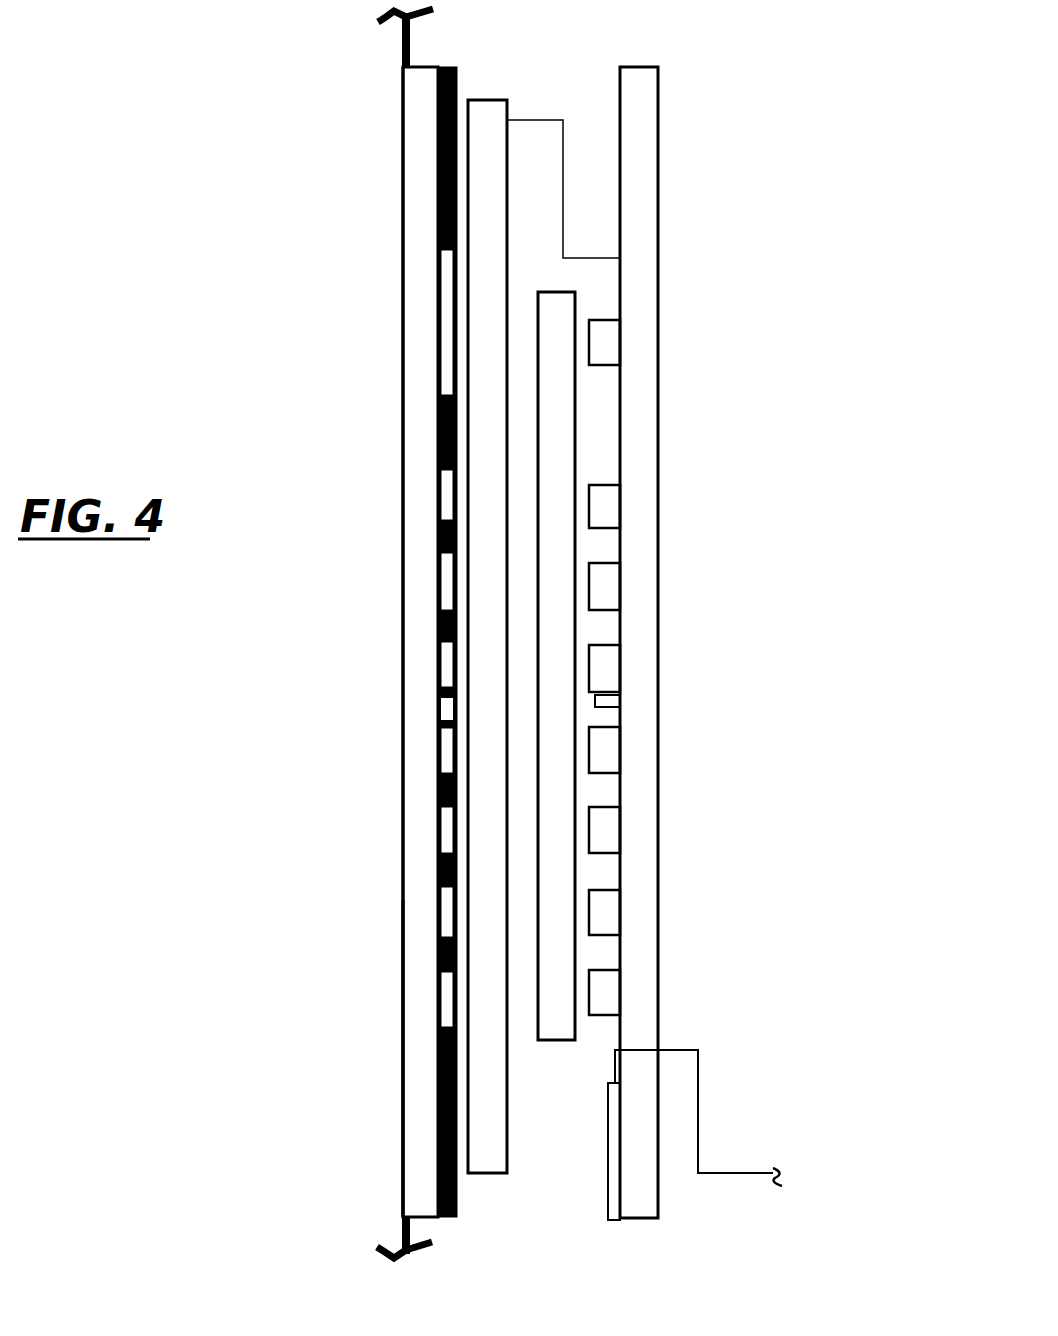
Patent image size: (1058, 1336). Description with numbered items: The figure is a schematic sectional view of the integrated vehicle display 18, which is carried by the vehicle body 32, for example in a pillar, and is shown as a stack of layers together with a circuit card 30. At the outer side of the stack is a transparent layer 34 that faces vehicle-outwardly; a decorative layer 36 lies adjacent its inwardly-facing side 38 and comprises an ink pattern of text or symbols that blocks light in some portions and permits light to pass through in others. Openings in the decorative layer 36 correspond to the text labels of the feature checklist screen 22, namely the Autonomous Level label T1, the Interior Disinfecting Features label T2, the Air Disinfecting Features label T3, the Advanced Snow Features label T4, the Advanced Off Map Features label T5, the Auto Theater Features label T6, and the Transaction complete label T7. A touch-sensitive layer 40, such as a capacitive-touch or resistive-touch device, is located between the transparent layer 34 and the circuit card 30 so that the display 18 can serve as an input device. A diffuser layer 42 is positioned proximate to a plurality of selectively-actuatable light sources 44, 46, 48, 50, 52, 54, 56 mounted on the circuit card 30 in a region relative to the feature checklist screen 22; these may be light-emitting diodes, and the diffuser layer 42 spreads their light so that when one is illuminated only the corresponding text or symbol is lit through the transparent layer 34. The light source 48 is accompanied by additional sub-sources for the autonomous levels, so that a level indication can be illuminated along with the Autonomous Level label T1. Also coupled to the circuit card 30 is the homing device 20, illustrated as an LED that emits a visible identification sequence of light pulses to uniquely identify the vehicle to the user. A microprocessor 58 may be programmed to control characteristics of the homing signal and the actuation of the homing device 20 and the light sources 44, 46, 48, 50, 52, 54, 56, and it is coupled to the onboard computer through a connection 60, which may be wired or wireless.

The integrated vehicle display 18 is at (222, 722).
The homing device 20 is at (605, 303).
The feature checklist screen 22 is at (398, 435).
The circuit card 30 is at (662, 205).
The vehicle body 32 is at (404, 48).
The transparent layer 34 is at (398, 1100).
The decorative layer 36 is at (449, 62).
The inwardly-facing side 38 is at (441, 284).
The touch-sensitive layer 40 is at (489, 96).
The diffuser layer 42 is at (582, 432).
The selectively-actuatable light source 44 is at (613, 515).
The selectively-actuatable light source 46 is at (613, 597).
The selectively-actuatable light source 48 is at (613, 678).
The selectively-actuatable light source 50 is at (613, 760).
The selectively-actuatable light source 52 is at (613, 841).
The selectively-actuatable light source 54 is at (613, 922).
The selectively-actuatable light source 56 is at (613, 1003).
The microprocessor 58 is at (615, 1170).
The connection 60 is at (700, 1128).
The Autonomous Level label T1 is at (434, 671).
The Interior Disinfecting Features label T2 is at (434, 489).
The Air Disinfecting Features label T3 is at (434, 571).
The Advanced Snow Features label T4 is at (434, 754).
The Advanced Off Map Features label T5 is at (434, 837).
The Auto Theater Features label T6 is at (434, 909).
The Transaction complete label T7 is at (434, 984).